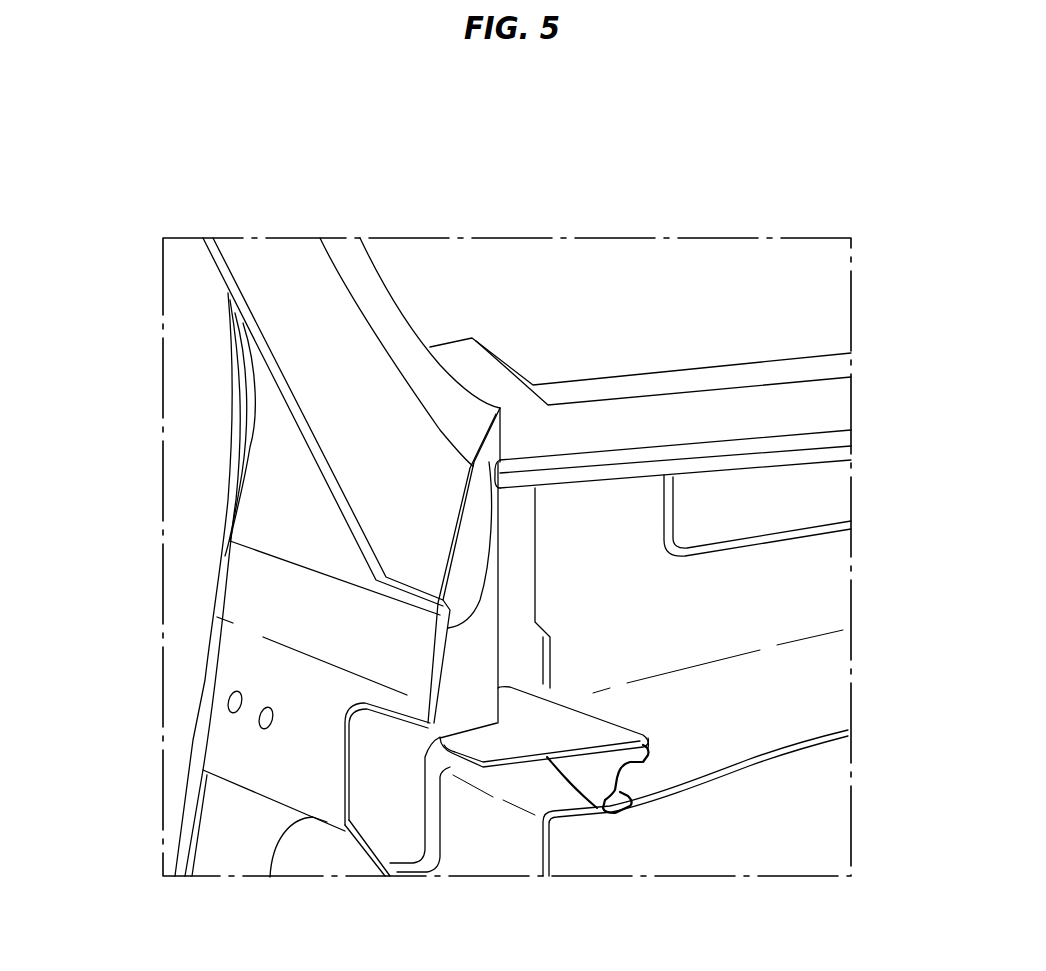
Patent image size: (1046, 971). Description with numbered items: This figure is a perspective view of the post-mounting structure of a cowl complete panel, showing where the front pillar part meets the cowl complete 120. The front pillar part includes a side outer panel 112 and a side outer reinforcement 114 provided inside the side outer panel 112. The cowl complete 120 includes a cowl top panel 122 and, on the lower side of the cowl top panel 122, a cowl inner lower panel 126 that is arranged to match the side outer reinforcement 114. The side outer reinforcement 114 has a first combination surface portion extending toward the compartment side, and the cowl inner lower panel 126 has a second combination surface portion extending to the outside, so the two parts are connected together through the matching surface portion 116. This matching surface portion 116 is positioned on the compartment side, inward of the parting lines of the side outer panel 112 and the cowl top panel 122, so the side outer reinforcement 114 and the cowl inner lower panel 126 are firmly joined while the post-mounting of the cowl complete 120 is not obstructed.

The side outer panel 112 is at (318, 368).
The side outer reinforcement 114 is at (385, 770).
The matching surface portion 116 is at (518, 517).
The cowl complete 120 is at (797, 483).
The cowl top panel 122 is at (735, 373).
The cowl inner lower panel 126 is at (717, 717).